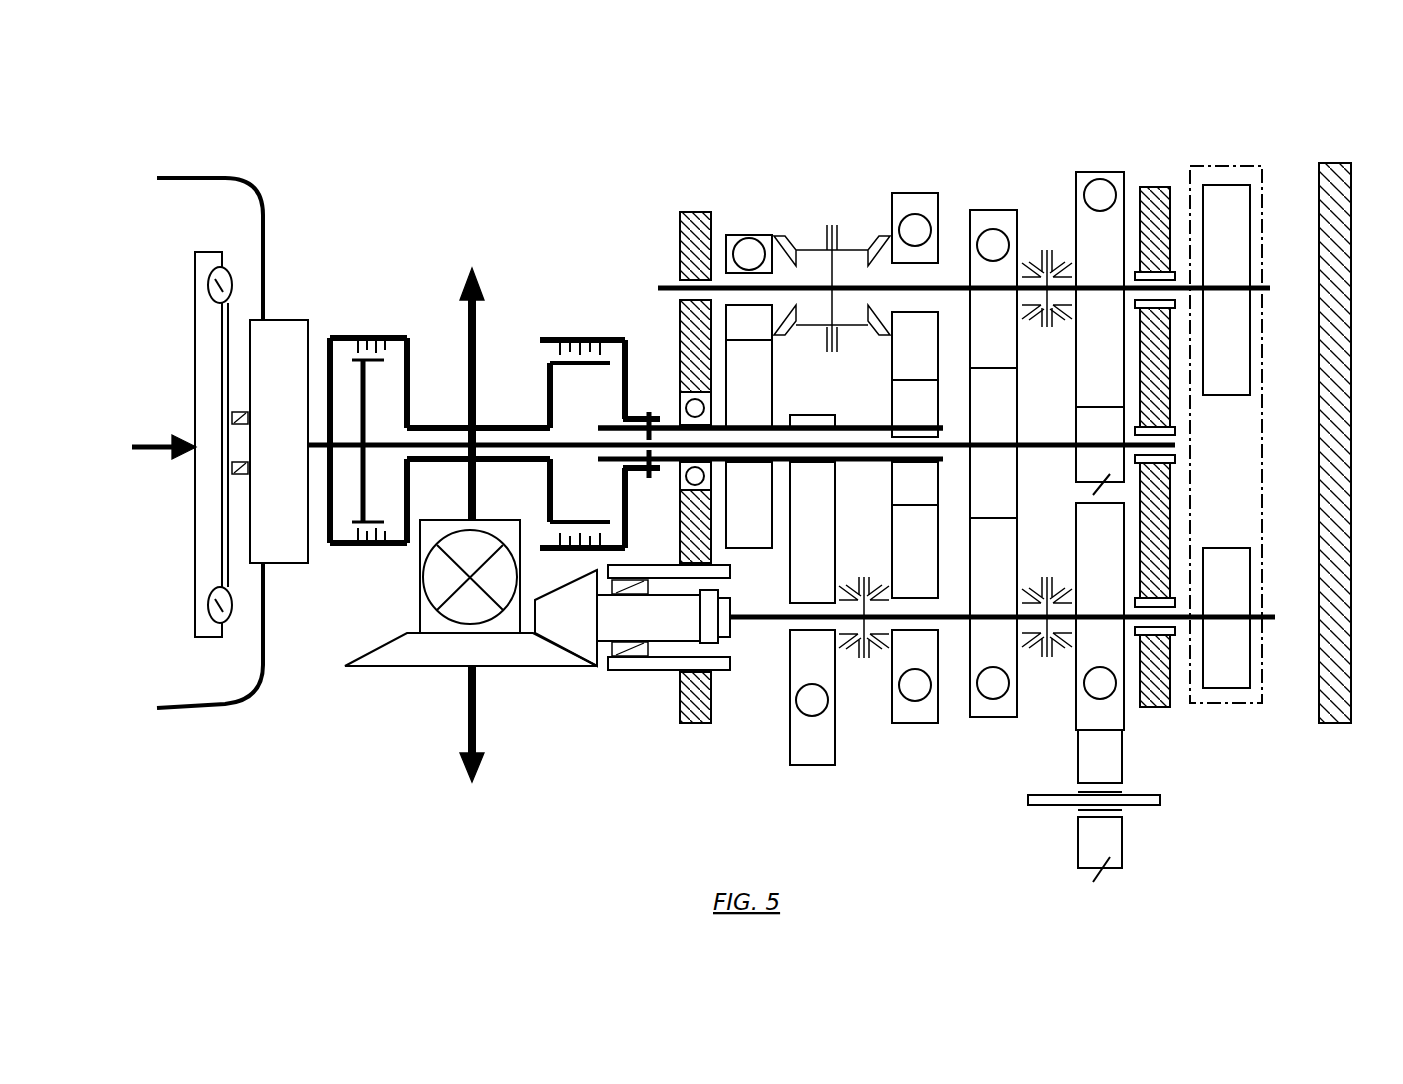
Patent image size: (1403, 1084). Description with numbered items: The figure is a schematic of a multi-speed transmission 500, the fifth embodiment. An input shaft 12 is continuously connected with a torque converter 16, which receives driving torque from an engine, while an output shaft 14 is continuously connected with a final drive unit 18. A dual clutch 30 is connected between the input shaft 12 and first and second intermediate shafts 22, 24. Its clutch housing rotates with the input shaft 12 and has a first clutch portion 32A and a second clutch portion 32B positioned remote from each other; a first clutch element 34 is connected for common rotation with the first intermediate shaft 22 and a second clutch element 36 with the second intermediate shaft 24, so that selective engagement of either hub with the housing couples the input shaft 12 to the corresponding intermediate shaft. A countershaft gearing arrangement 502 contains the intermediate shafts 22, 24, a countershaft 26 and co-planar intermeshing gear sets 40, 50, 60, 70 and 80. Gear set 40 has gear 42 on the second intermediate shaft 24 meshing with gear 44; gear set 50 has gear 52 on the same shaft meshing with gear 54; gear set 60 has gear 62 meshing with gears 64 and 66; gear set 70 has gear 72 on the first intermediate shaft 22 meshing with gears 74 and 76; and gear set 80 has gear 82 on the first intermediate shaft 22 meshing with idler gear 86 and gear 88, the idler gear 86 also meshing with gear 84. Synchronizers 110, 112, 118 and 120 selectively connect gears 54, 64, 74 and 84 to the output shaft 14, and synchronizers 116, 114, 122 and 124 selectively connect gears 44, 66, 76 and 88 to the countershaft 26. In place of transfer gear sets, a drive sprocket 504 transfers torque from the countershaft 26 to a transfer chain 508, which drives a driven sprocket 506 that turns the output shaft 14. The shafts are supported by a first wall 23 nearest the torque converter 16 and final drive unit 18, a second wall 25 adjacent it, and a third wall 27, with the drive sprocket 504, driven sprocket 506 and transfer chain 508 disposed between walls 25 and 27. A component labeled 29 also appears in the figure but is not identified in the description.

The multi-speed transmission 500 is at (302, 166).
The input shaft 12 is at (312, 447).
The output shaft 14 is at (763, 613).
The torque converter 16 is at (195, 548).
The final drive unit 18 is at (618, 688).
The first intermediate shaft 22 is at (673, 443).
The first wall 23 is at (688, 723).
The second intermediate shaft 24 is at (862, 461).
The second wall 25 is at (1153, 707).
The countershaft 26 is at (1262, 288).
The third wall 27 is at (1325, 725).
The bearing 29 is at (680, 272).
The dual clutch 30 is at (485, 377).
The first clutch portion 32A is at (347, 338).
The second clutch portion 32B is at (547, 392).
The first clutch element 34 is at (367, 402).
The second clutch element 36 is at (585, 340).
The gear set 40 is at (723, 352).
The gear 42 is at (749, 505).
The gear 44 is at (749, 366).
The gear set 50 is at (808, 646).
The gear 52 is at (813, 415).
The gear 54 is at (812, 697).
The gear set 60 is at (942, 424).
The gear 62 is at (915, 483).
The gear 64 is at (915, 551).
The gear 66 is at (915, 374).
The gear set 70 is at (988, 502).
The gear 72 is at (992, 403).
The gear 74 is at (992, 562).
The gear 76 is at (992, 339).
The gear set 80 is at (1105, 484).
The gear 82 is at (1099, 424).
The gear 84 is at (1100, 616).
The idler gear 86 is at (1094, 806).
The gear 88 is at (1099, 239).
The synchronizer 110 is at (850, 655).
The synchronizer 112 is at (878, 582).
The synchronizer 114 is at (850, 337).
The synchronizer 116 is at (787, 236).
The synchronizer 118 is at (1032, 655).
The synchronizer 120 is at (1058, 580).
The synchronizer 122 is at (1030, 326).
The synchronizer 124 is at (1058, 250).
The countershaft gearing arrangement 502 is at (1250, 405).
The drive sprocket 504 is at (1226, 290).
The driven sprocket 506 is at (1226, 618).
The transfer chain 508 is at (1265, 458).